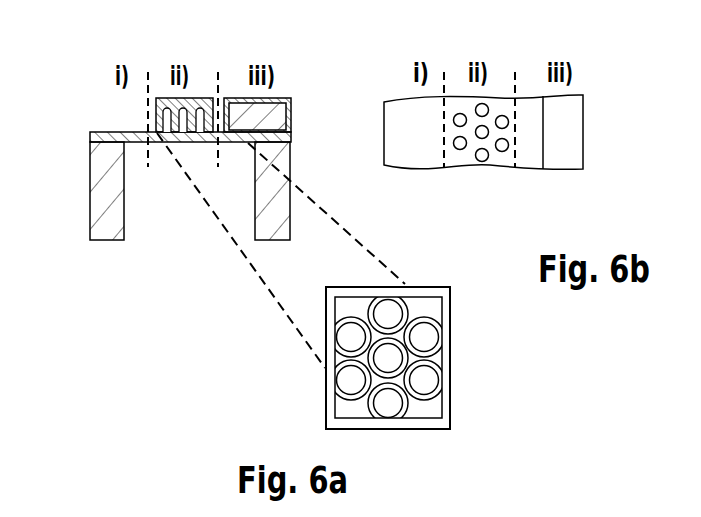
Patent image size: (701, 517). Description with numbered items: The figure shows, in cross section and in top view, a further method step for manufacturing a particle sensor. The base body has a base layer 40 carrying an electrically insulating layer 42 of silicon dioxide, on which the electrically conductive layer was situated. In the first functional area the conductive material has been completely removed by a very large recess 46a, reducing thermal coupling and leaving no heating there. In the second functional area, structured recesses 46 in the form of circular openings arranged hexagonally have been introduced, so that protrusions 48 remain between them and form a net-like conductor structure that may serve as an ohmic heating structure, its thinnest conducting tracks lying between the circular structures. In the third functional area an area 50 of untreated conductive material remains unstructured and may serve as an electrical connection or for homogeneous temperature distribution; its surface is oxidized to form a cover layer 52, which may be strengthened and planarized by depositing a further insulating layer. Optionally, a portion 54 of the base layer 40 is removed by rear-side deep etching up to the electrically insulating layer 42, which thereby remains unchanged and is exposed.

In FIG. 6B, the base layer 40 is at (483, 166).
In FIG. 6A, the electrically insulating layer 42 is at (100, 137).
In FIG. 6B, the electrically insulating layer 42 is at (528, 155).
In FIG. 6A, the recess 46 is at (428, 380).
In FIG. 6B, the recess 46a is at (415, 162).
In FIG. 6A, the protrusions 48 is at (167, 110).
In FIG. 6B, the protrusions 48 is at (498, 158).
In FIG. 6A, the area of untreated material 50 is at (273, 116).
In FIG. 6B, the area of untreated material 50 is at (577, 135).
In FIG. 6A, the cover layer 52 is at (208, 103).
In FIG. 6B, the cover layer 52 is at (503, 107).
In FIG. 6A, the portion of base layer 54 is at (182, 220).